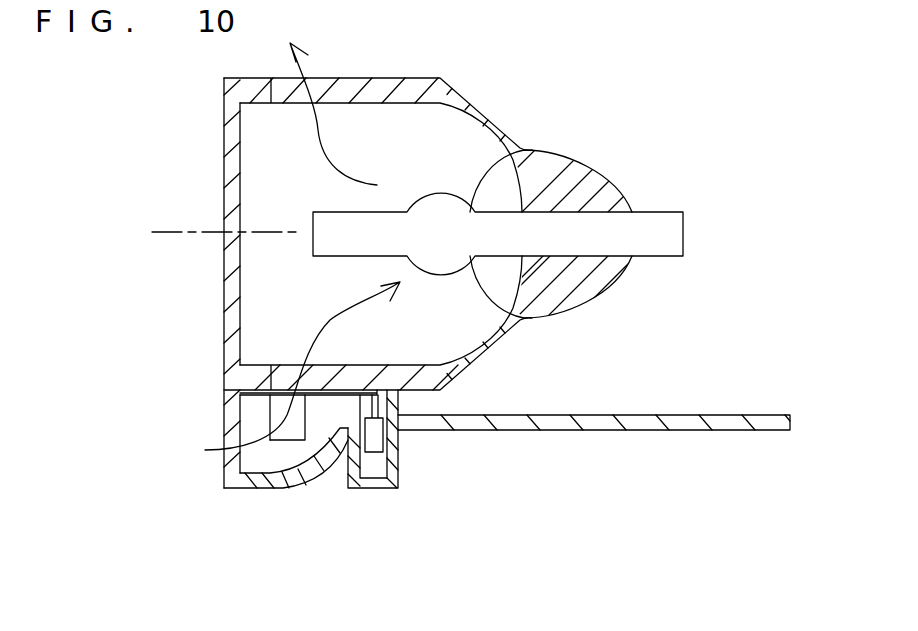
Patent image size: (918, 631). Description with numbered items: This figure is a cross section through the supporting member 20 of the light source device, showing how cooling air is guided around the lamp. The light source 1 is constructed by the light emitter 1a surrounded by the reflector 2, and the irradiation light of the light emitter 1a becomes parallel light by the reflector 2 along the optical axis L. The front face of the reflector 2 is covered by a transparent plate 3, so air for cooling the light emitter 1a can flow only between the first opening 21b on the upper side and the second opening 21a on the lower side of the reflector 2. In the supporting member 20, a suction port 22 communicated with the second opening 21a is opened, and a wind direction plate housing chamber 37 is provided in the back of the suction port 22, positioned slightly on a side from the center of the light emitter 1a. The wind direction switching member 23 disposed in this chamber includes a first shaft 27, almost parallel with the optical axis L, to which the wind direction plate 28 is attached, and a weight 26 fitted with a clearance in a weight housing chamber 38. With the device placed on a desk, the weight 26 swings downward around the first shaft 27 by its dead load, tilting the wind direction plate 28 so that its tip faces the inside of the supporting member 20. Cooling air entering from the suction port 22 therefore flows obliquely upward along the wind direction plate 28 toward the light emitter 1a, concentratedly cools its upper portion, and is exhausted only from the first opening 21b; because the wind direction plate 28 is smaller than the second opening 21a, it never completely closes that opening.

The light source 1 is at (520, 40).
The light emitter 1a is at (525, 149).
The reflector 2 is at (465, 94).
The transparent plate 3 is at (232, 157).
The supporting member 20 is at (603, 430).
The second opening 21a is at (348, 377).
The first opening 21b is at (352, 91).
The suction port 22 is at (234, 417).
The wind direction switching member 23 is at (387, 546).
The weight 26 is at (374, 447).
The first shaft 27 is at (254, 397).
The wind direction plate 28 is at (296, 420).
The wind direction plate housing chamber 37 is at (275, 462).
The weight housing chamber 38 is at (385, 465).
The optical axis L is at (180, 233).